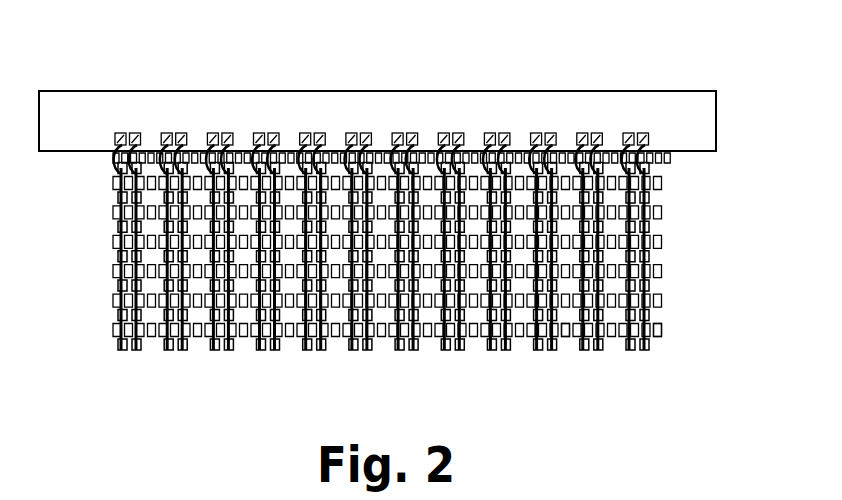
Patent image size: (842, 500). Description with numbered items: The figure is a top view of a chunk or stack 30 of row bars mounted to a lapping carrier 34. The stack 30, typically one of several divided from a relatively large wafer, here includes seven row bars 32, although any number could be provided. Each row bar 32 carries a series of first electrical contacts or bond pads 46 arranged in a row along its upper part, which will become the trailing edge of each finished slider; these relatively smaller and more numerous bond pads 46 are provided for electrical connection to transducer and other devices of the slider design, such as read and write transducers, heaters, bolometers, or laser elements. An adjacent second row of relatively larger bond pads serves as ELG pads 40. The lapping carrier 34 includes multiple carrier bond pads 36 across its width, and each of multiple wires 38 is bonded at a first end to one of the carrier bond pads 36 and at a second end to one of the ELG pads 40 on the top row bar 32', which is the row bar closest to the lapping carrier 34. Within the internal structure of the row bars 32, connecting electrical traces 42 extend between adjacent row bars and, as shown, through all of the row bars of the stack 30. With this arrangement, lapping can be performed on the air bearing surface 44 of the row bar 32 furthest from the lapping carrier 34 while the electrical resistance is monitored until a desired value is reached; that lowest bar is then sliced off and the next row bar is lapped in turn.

The stack 30 is at (674, 238).
The row bar 32 is at (436, 335).
The top row bar 32' is at (439, 167).
The lapping carrier 34 is at (702, 113).
The carrier bond pad 36 is at (628, 147).
The wire 38 is at (523, 147).
The ELG pad 40 is at (600, 350).
The connecting electrical trace 42 is at (563, 333).
The air bearing surface 44 is at (455, 352).
The bond pad 46 is at (658, 326).